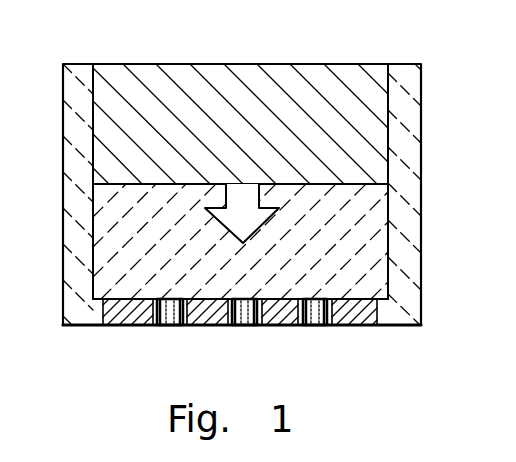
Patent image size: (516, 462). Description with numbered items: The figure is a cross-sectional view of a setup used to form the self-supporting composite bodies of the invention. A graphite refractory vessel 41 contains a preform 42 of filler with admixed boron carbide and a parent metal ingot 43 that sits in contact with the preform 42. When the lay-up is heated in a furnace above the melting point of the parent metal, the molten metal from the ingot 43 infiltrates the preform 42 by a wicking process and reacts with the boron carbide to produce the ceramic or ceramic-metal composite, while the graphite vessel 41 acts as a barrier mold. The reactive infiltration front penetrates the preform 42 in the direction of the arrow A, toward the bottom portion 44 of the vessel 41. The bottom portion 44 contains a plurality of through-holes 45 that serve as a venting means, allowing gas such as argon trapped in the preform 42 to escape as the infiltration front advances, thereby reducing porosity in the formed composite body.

The graphite refractory vessel 41 is at (413, 151).
The preform 42 is at (371, 262).
The parent metal ingot 43 is at (303, 92).
The bottom portion 44 is at (223, 328).
The through-holes 45 is at (173, 327).
The arrow A is at (226, 197).